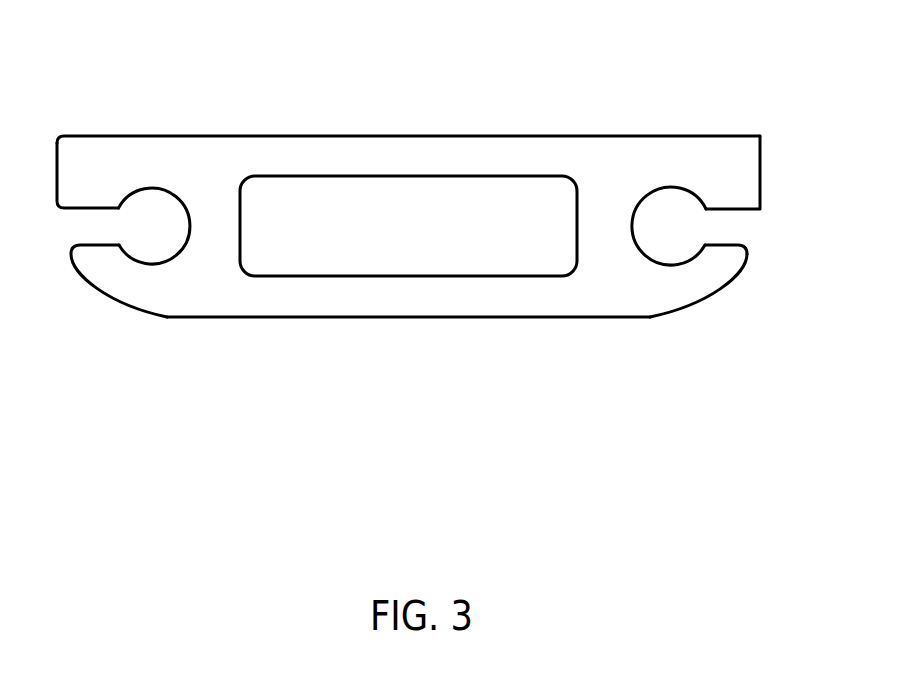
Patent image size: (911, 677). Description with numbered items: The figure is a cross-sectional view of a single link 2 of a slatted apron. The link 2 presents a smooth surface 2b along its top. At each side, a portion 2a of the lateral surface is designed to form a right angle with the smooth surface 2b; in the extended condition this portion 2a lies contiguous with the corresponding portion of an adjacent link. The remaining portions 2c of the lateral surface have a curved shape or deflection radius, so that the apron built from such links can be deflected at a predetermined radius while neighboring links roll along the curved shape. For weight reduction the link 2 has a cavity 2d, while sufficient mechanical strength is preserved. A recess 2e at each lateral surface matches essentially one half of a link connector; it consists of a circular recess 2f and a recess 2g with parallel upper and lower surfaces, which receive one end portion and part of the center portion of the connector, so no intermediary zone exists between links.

The link 2 is at (446, 235).
The portion of lateral surface 2a is at (760, 160).
The smooth surface 2b is at (447, 136).
The remaining portions of lateral surface 2c is at (725, 292).
The cavity 2d is at (360, 248).
The recess 2e is at (105, 323).
The circular recess 2f is at (150, 230).
The recess having parallel upper and lower surfaces 2g is at (90, 222).